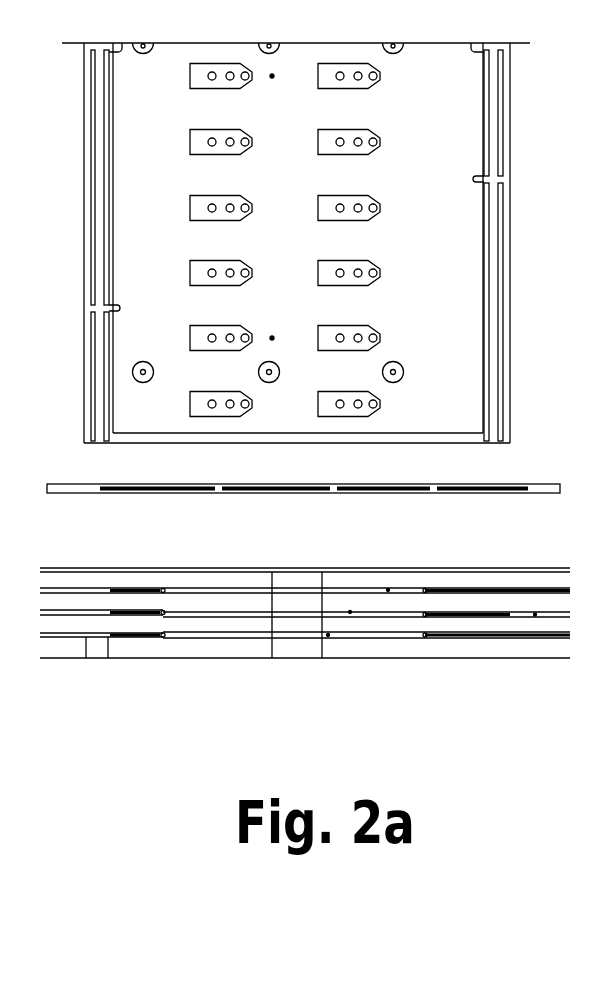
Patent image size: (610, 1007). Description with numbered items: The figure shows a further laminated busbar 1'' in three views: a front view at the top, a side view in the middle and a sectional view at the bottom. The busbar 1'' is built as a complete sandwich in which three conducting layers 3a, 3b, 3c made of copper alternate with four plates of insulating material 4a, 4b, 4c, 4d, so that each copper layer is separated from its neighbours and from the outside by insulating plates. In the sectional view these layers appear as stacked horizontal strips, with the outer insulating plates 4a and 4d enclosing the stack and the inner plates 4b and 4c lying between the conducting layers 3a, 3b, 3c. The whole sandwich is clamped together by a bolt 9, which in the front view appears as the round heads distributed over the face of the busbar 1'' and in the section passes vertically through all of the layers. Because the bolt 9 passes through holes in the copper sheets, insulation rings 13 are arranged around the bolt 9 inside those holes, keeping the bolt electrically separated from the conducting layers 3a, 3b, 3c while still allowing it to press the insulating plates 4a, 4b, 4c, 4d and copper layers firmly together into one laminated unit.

The busbar 1'' is at (303, 268).
The bolt 9 is at (150, 379).
The insulation rings 13 is at (388, 590).
The conducting layer 3a is at (132, 637).
The conducting layer 3b is at (508, 612).
The conducting layer 3c is at (132, 593).
The plate of insulating material 4a is at (75, 647).
The plate of insulating material 4b is at (472, 623).
The plate of insulating material 4c is at (78, 603).
The plate of insulating material 4d is at (487, 580).